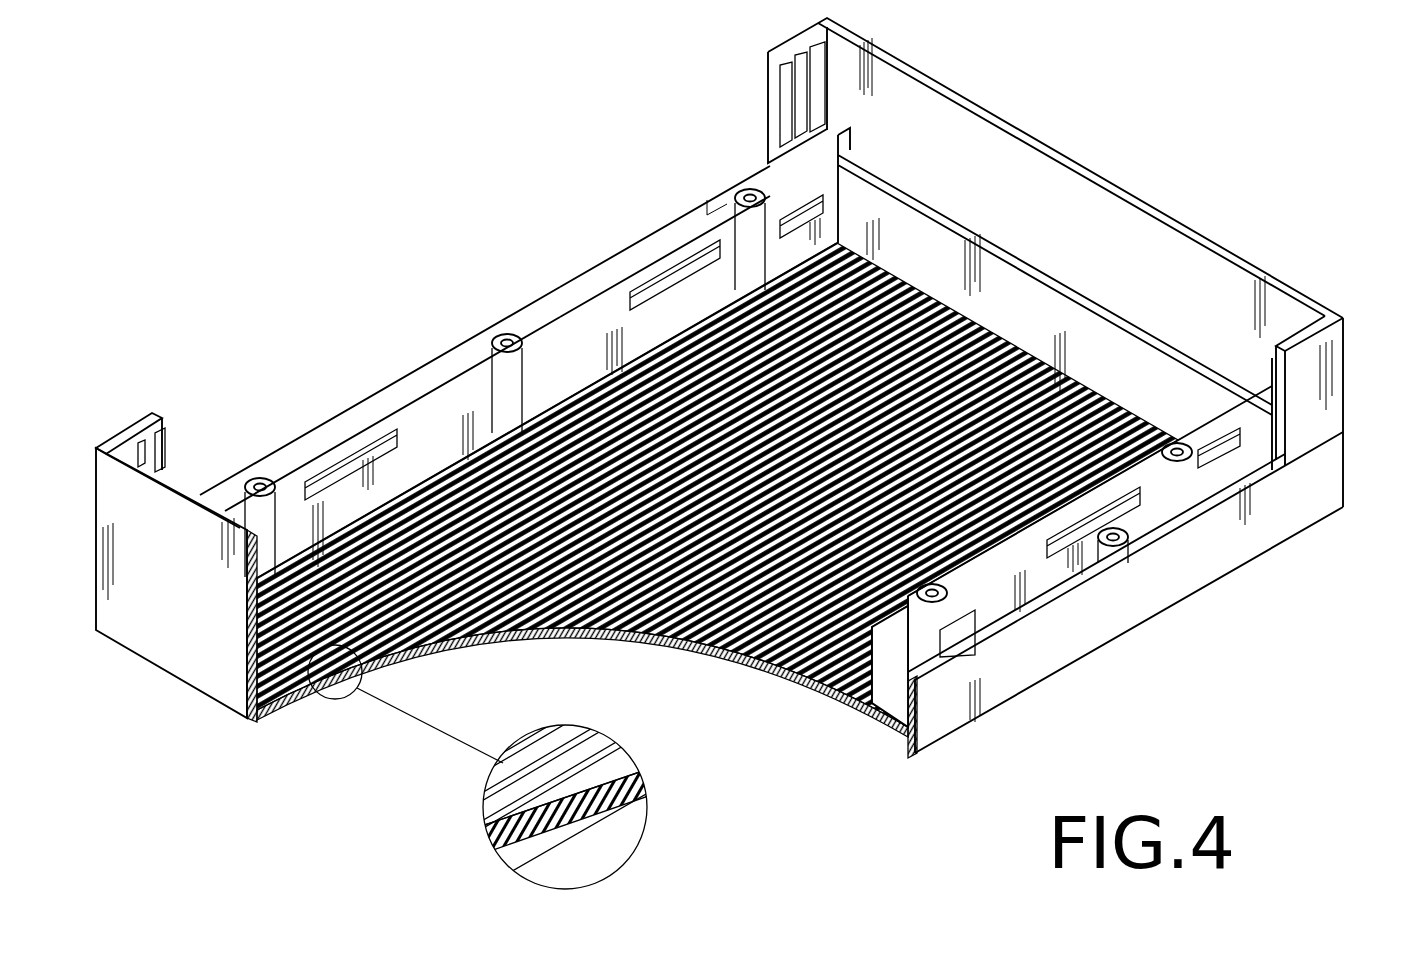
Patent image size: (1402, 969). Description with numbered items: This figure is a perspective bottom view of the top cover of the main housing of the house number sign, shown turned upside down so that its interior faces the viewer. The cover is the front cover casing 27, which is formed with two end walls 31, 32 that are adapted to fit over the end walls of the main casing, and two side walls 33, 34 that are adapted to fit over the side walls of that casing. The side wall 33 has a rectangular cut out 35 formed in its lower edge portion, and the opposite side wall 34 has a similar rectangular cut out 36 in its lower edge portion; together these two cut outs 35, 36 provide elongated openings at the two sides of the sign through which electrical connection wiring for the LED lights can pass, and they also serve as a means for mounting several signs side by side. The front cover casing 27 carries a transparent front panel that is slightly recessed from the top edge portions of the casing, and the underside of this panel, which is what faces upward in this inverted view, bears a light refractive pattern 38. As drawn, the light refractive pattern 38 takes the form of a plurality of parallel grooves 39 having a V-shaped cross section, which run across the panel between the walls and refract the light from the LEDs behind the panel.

The front cover casing 27 is at (1258, 568).
The end wall 31 is at (1075, 184).
The end wall 32 is at (162, 648).
The side wall 33 is at (1077, 648).
The side wall 34 is at (415, 372).
The rectangular cut out 35 is at (1296, 456).
The rectangular cut out 36 is at (680, 206).
The light refractive pattern 38 is at (747, 655).
The parallel grooves 39 is at (625, 445).